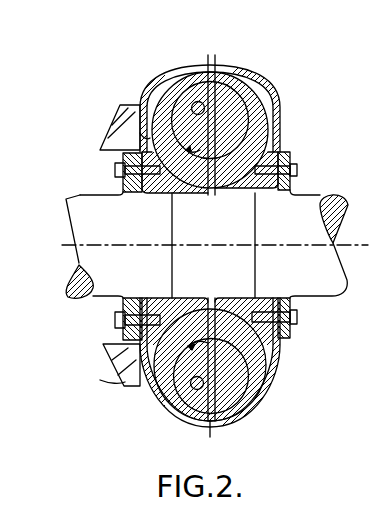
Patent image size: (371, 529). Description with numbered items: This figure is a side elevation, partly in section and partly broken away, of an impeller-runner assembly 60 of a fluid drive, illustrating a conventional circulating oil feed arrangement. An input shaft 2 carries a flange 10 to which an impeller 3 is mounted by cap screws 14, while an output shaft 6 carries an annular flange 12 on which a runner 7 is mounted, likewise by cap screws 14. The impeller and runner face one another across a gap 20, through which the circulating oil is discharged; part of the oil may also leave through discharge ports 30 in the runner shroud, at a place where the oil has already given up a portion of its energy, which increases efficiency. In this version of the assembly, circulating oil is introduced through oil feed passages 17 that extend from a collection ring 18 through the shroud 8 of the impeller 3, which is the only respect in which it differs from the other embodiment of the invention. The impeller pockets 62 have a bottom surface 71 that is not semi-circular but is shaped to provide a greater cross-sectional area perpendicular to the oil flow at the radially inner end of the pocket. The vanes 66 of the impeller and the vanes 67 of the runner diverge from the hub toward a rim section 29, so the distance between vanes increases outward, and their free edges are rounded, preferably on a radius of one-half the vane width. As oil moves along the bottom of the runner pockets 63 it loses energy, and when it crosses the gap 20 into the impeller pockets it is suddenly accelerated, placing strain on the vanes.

The input shaft 2 is at (72, 203).
The impeller 3 is at (140, 93).
The output shaft 6 is at (297, 198).
The runner 7 is at (281, 128).
The shroud of the impeller 8 is at (180, 90).
The flange 10 is at (117, 313).
The annular flange 12 is at (296, 325).
The cap screws 14 is at (117, 170).
The oil feed passages 17 is at (160, 126).
The collection ring 18 is at (113, 148).
The gap 20 is at (211, 196).
The rim section 29 is at (202, 65).
The discharge ports 30 is at (310, 80).
The impeller-runner assembly 60 is at (209, 206).
The impeller pockets 62 is at (162, 77).
The runner pockets 63 is at (258, 127).
The vanes of the impeller 66 is at (166, 396).
The vanes of the runner 67 is at (238, 413).
The bottom surface 71 is at (198, 170).